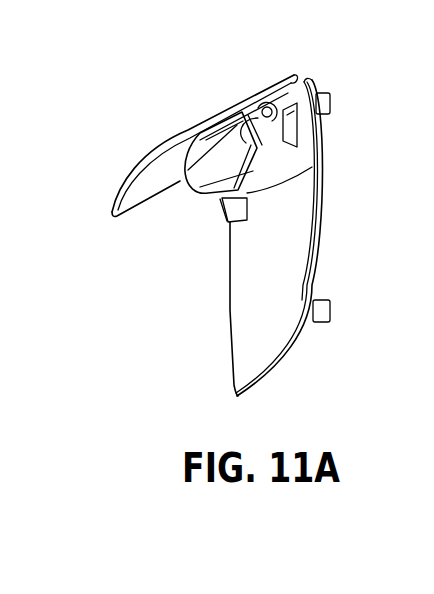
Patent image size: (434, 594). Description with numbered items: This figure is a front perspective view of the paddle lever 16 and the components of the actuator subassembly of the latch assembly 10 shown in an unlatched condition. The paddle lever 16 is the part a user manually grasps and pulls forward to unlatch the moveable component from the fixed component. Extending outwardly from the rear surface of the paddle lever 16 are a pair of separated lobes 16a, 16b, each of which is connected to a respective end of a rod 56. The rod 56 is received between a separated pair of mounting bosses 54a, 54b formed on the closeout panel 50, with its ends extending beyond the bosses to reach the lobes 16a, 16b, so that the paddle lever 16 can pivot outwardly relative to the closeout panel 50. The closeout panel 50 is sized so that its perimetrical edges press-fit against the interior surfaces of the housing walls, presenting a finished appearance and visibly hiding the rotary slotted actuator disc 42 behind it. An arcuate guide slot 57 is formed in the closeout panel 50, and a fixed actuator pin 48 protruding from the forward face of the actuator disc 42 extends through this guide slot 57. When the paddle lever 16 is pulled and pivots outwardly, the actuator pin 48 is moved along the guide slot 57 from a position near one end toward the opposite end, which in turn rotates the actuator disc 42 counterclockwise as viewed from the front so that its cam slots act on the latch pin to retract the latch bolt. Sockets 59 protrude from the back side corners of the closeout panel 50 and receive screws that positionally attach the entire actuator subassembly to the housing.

The latch assembly 10 is at (130, 74).
The paddle lever 16 is at (138, 157).
The lobe 16a is at (182, 186).
The lobe 16b is at (269, 97).
The rotary slotted actuator disc 42 is at (322, 195).
The actuator pin 48 is at (230, 208).
The closeout panel 50 is at (281, 289).
The mounting boss 54a is at (213, 201).
The mounting boss 54b is at (284, 132).
The rod 56 is at (240, 108).
The arcuate guide slot 57 is at (310, 172).
The socket 59 is at (324, 94).